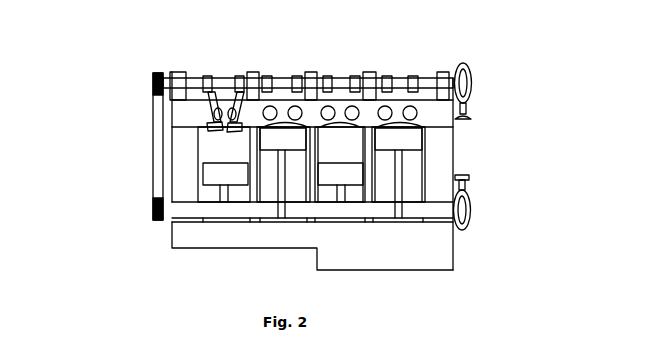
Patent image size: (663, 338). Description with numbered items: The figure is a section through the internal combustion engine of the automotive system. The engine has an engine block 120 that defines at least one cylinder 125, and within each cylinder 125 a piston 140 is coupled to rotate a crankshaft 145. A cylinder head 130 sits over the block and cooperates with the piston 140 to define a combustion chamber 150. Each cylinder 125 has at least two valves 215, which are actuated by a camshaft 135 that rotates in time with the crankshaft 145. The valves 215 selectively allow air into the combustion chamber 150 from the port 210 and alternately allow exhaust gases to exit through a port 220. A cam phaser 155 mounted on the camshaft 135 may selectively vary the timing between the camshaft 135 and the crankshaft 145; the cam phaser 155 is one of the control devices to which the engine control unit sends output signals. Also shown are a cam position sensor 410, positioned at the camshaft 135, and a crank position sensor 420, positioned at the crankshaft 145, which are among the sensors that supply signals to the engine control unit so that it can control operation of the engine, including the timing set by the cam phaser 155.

The engine block 120 is at (172, 163).
The cylinder 125 is at (316, 152).
The cylinder head 130 is at (172, 125).
The camshaft 135 is at (220, 76).
The piston 140 is at (343, 173).
The crankshaft 145 is at (195, 212).
The combustion chamber 150 is at (400, 126).
The cam phaser 155 is at (209, 123).
The port 210 is at (333, 93).
The valves 215 is at (212, 113).
The port 220 is at (277, 75).
The cam position sensor 410 is at (467, 117).
The crank position sensor 420 is at (467, 178).